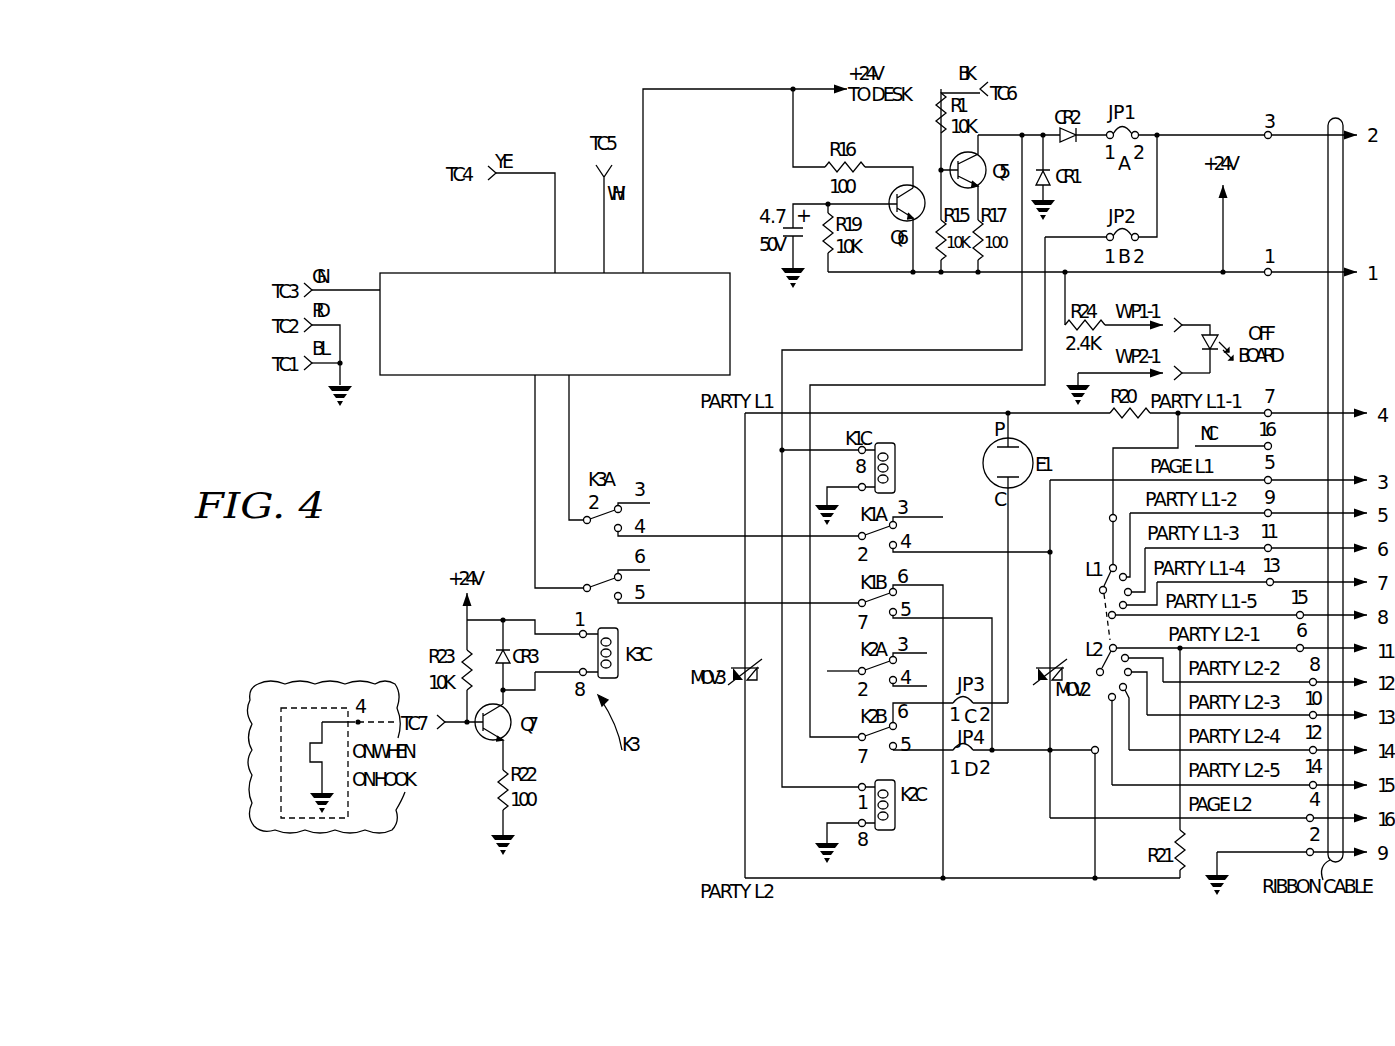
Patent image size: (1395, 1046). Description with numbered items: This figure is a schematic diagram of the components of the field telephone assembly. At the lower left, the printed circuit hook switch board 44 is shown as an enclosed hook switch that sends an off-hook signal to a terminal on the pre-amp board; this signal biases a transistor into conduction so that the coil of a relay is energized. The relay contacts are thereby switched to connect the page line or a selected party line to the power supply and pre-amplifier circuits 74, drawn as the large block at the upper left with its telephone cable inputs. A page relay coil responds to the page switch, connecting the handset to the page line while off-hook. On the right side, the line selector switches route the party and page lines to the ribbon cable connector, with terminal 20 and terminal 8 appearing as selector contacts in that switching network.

The power supply and pre-amplifier circuits 74 is at (430, 375).
The printed circuit hook switch board 44 is at (283, 684).
The terminal 20 is at (1102, 519).
The terminal 8 is at (1089, 751).